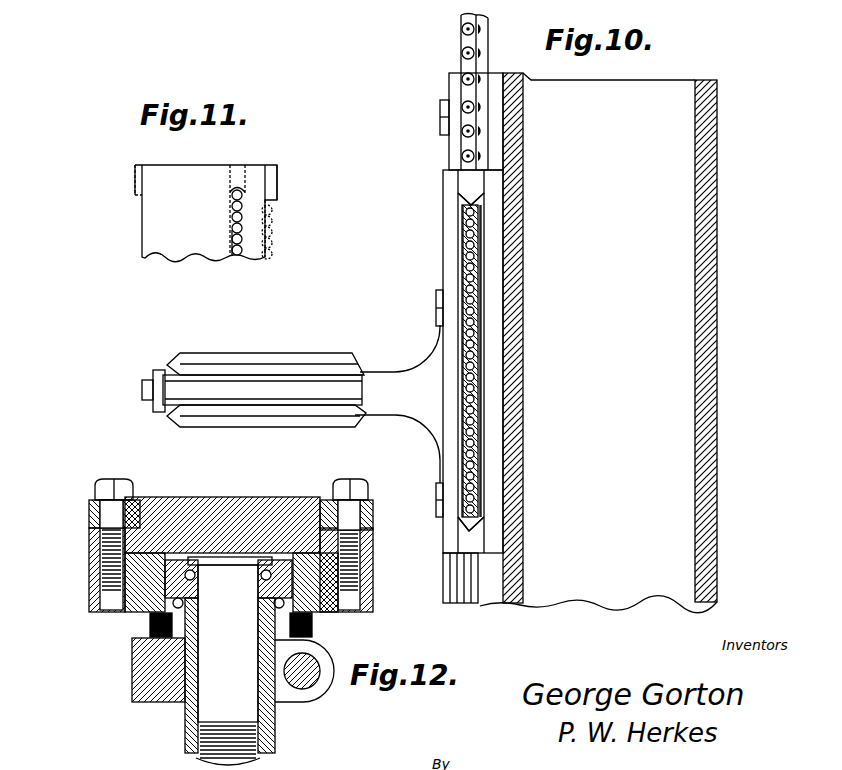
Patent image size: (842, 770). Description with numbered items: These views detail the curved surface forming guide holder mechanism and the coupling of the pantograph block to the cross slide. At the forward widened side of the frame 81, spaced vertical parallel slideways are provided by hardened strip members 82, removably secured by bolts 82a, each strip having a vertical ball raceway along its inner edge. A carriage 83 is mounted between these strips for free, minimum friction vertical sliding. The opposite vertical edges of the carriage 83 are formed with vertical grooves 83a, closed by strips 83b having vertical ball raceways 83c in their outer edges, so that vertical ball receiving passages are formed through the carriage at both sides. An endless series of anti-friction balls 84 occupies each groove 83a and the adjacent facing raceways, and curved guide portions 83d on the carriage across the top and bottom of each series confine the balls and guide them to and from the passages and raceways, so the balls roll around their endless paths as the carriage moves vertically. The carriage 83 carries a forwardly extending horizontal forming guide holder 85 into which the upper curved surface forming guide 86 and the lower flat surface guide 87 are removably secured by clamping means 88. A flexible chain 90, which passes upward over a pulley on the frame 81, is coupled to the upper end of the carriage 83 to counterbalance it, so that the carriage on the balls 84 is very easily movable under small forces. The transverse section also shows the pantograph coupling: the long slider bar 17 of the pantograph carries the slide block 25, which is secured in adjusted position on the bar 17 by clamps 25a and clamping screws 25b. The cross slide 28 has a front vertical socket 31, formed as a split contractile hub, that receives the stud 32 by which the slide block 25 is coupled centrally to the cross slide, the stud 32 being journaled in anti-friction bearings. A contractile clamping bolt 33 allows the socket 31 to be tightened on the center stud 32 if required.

In FIG. 12, the long slider bar 17 is at (246, 497).
In FIG. 12, the slide block 25 is at (125, 612).
In FIG. 12, the clamps 25a is at (89, 518).
In FIG. 12, the clamping screws 25b is at (97, 490).
In FIG. 12, the cross slide 28 is at (140, 688).
In FIG. 12, the vertical socket 31 is at (185, 650).
In FIG. 12, the stud 32 is at (207, 690).
In FIG. 12, the clamping bolt 33 is at (300, 690).
In FIG. 10, the frame 81 is at (665, 95).
In FIG. 10, the strip members 82 is at (444, 578).
In FIG. 10, the bolts 82a is at (436, 497).
In FIG. 10, the carriage 83 is at (490, 263).
In FIG. 11, the carriage 83 is at (200, 175).
In FIG. 11, the vertical grooves 83a is at (232, 225).
In FIG. 10, the strips 83b is at (480, 362).
In FIG. 10, the ball raceways 83c is at (476, 407).
In FIG. 11, the ball raceways 83c is at (270, 220).
In FIG. 10, the curved guide portions 83d is at (474, 185).
In FIG. 11, the curved guide portions 83d is at (135, 180).
In FIG. 10, the anti-friction balls 84 is at (470, 337).
In FIG. 11, the anti-friction balls 84 is at (272, 242).
In FIG. 10, the forming guide holder 85 is at (345, 395).
In FIG. 10, the curved surface forming guide 86 is at (288, 362).
In FIG. 10, the flat surface guide 87 is at (255, 427).
In FIG. 10, the clamping means 88 is at (150, 397).
In FIG. 10, the chain 90 is at (461, 42).